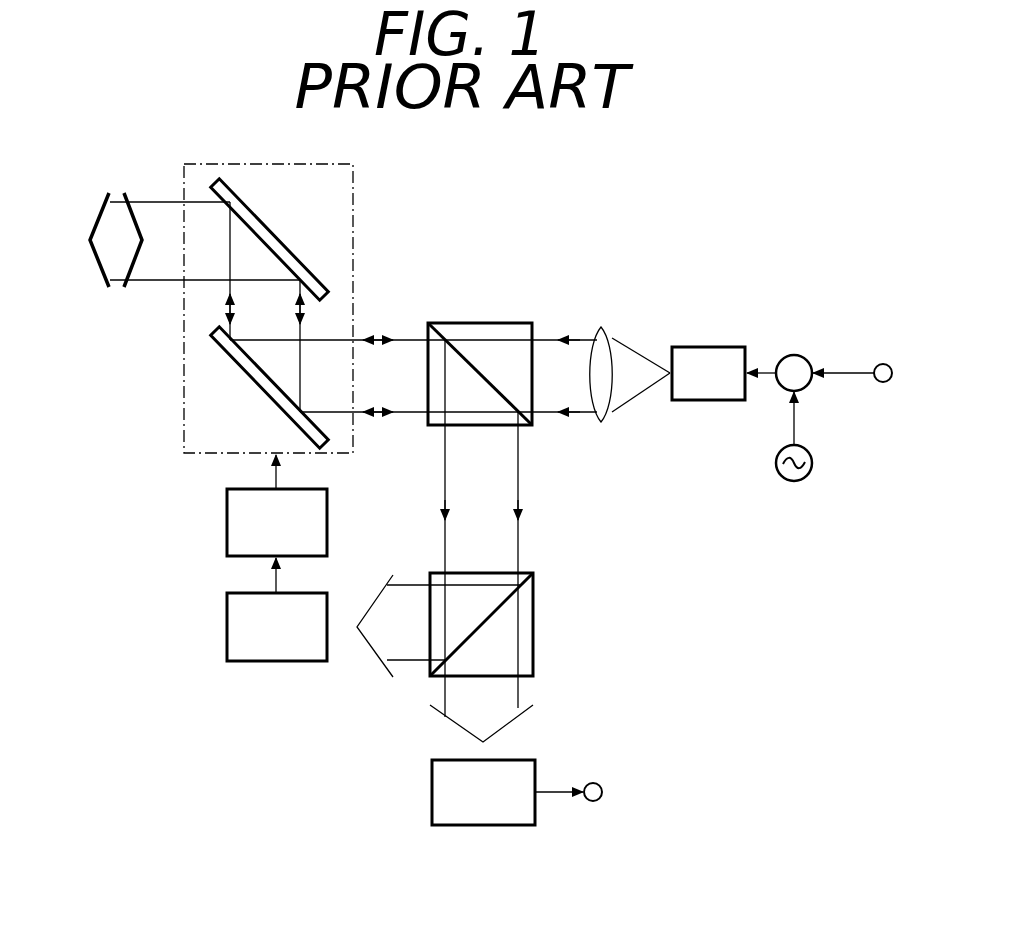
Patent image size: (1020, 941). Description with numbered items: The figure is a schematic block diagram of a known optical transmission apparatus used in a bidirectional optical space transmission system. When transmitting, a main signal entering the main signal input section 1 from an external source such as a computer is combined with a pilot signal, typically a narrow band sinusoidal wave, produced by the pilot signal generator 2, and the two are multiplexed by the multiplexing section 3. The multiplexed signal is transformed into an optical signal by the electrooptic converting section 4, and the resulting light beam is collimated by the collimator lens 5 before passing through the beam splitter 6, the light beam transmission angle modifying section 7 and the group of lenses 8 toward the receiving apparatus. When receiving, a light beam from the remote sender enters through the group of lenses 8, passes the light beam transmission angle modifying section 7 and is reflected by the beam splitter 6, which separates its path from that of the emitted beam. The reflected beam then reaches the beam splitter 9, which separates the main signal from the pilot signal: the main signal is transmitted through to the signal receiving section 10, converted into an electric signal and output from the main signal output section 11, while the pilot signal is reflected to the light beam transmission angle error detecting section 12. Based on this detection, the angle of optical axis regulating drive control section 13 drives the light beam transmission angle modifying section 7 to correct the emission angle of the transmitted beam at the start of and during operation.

The main signal input section 1 is at (884, 364).
The pilot signal generator 2 is at (812, 463).
The multiplexing section 3 is at (797, 355).
The electrooptic converting section 4 is at (710, 347).
The collimator lens 5 is at (601, 327).
The beam splitter 6 is at (483, 323).
The light beam transmission angle modifying section 7 is at (353, 187).
The group of lenses 8 is at (104, 254).
The beam splitter 9 is at (533, 615).
The signal receiving section 10 is at (485, 825).
The main signal output section 11 is at (603, 790).
The light beam transmission angle error detecting section 12 is at (227, 628).
The angle of optical axis regulating drive control section 13 is at (227, 522).